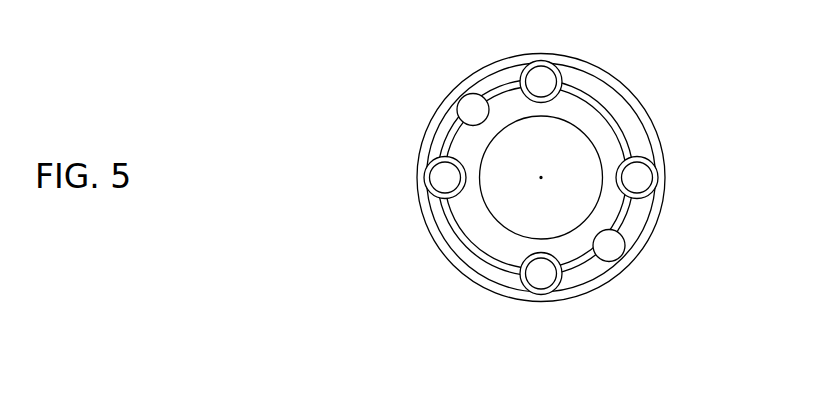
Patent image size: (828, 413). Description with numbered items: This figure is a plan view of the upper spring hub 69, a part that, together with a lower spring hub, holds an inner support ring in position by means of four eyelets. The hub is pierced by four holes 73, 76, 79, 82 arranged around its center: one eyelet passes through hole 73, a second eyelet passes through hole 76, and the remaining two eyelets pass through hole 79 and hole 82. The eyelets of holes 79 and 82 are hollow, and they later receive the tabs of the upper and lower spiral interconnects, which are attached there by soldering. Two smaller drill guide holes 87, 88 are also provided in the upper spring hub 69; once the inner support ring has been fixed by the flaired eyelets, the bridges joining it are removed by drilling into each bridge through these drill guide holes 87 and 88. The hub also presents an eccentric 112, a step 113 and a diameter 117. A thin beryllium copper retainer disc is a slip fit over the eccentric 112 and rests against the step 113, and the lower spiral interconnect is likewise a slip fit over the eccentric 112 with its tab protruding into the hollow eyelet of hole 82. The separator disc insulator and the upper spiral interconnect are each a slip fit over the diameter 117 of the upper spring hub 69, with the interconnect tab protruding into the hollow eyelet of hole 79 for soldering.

The upper spring hub 69 is at (420, 231).
The hole 73 is at (424, 178).
The hole 76 is at (658, 178).
The hole 79 is at (541, 60).
The hole 82 is at (541, 294).
The drill guide hole 87 is at (462, 98).
The drill guide hole 88 is at (620, 257).
The eccentric 112 is at (620, 95).
The step 113 is at (465, 256).
The diameter 117 is at (619, 135).